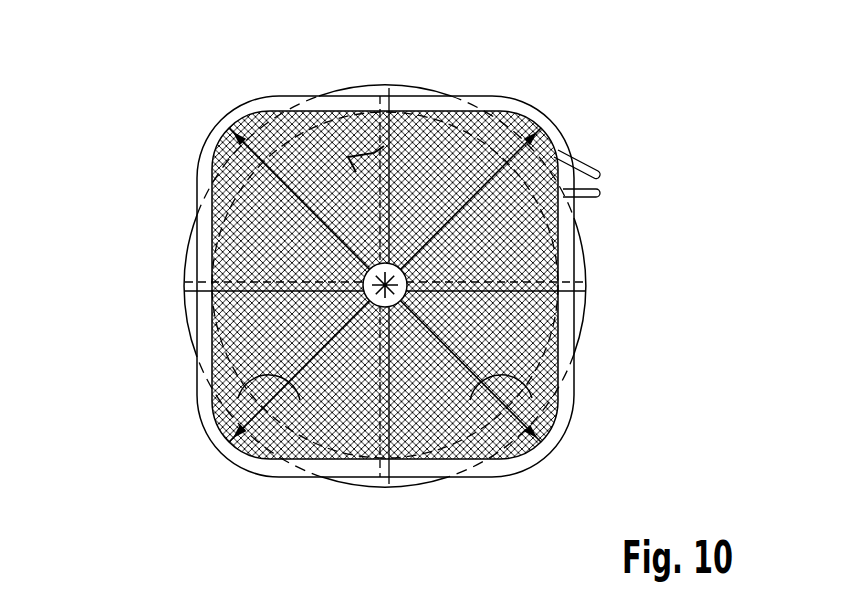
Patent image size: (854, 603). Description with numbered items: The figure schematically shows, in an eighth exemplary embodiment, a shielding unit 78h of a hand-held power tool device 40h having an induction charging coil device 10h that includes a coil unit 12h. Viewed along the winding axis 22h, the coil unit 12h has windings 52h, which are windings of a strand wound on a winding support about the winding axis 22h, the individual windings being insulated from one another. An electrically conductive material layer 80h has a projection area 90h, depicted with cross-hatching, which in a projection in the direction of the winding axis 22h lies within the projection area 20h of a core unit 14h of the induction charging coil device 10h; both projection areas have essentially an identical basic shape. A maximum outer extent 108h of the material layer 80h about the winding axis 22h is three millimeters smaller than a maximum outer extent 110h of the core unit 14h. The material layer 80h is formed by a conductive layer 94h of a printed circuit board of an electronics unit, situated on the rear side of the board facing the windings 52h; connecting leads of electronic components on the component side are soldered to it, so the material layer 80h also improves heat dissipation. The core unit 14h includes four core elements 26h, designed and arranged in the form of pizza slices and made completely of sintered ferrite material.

The induction charging coil device 10h is at (158, 369).
The coil unit 12h is at (197, 286).
The core unit 14h is at (469, 299).
The projection area of core unit 20h is at (469, 299).
The core elements 26h is at (550, 452).
The winding axis 22h is at (405, 277).
The hand-held power tool device 40h is at (185, 80).
The windings 52h is at (578, 299).
The shielding unit 78h is at (158, 199).
The electrically conductive material layer 80h is at (385, 235).
The projection area of material layer 90h is at (385, 235).
The conductive layer of printed circuit board 94h is at (384, 146).
The maximum outer extent of material layer 108h is at (543, 410).
The maximum outer extent of core unit 110h is at (212, 415).